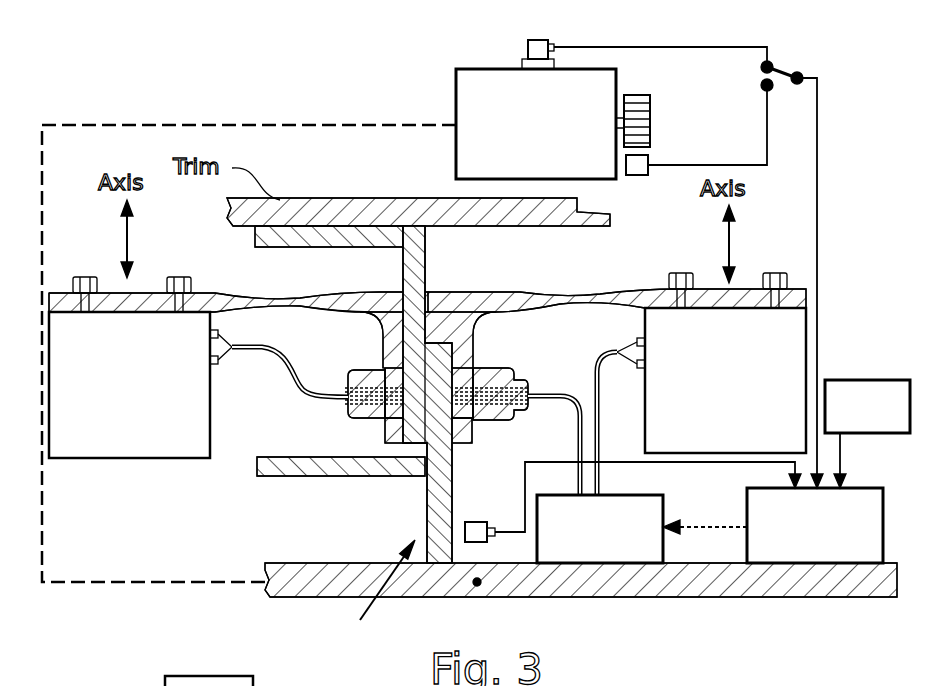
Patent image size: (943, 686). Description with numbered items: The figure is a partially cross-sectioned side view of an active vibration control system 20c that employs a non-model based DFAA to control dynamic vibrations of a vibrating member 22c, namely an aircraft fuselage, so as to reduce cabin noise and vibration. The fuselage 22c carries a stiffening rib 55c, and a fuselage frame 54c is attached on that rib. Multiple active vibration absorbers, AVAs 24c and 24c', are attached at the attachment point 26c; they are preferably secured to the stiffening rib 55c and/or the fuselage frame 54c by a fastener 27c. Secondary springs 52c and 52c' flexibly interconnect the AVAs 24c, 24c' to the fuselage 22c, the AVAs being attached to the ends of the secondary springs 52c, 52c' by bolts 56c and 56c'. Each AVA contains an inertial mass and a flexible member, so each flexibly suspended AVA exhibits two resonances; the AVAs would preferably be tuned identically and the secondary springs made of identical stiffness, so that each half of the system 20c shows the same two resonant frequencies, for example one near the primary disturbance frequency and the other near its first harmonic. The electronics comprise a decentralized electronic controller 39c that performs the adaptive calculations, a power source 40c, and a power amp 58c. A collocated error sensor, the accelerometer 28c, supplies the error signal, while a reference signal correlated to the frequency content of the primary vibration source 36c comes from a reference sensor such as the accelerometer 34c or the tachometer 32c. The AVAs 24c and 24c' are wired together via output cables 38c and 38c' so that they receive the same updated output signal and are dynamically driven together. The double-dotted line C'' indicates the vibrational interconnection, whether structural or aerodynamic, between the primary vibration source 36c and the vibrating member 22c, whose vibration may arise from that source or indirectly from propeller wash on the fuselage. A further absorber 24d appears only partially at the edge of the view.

The active vibration control system 20c is at (379, 597).
The vibrating member 22c is at (765, 598).
The active vibration absorber 24c is at (129, 385).
The active vibration absorber 24c' is at (725, 380).
The active vibration absorber 24d is at (541, 676).
The attachment point 26c is at (480, 585).
The fastener 27c is at (362, 372).
The accelerometer 28c is at (479, 521).
The tachometer 32c is at (650, 160).
The accelerometer 34c is at (528, 48).
The primary vibration source 36c is at (456, 96).
The output cable 38c is at (279, 386).
The output cable 38c' is at (575, 415).
The decentralized electronic controller 39c is at (747, 500).
The power source 40c is at (893, 380).
The secondary spring 52c is at (238, 279).
The secondary spring 52c' is at (617, 277).
The fuselage frame 54c is at (255, 237).
The stiffening rib 55c is at (425, 490).
The bolt 56c is at (371, 257).
The bolt 56c' is at (465, 262).
The power amp 58c is at (605, 598).
The vibrational interconnection C'' is at (249, 325).